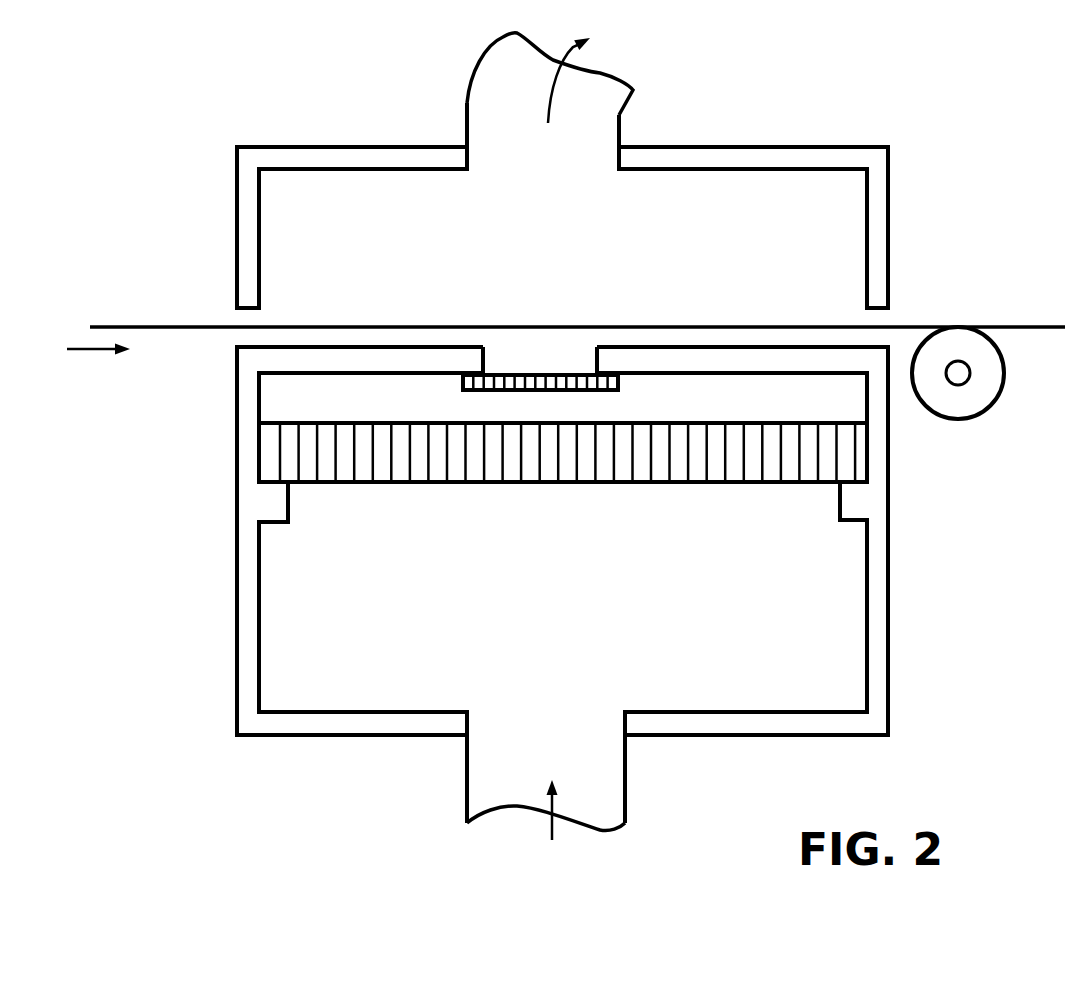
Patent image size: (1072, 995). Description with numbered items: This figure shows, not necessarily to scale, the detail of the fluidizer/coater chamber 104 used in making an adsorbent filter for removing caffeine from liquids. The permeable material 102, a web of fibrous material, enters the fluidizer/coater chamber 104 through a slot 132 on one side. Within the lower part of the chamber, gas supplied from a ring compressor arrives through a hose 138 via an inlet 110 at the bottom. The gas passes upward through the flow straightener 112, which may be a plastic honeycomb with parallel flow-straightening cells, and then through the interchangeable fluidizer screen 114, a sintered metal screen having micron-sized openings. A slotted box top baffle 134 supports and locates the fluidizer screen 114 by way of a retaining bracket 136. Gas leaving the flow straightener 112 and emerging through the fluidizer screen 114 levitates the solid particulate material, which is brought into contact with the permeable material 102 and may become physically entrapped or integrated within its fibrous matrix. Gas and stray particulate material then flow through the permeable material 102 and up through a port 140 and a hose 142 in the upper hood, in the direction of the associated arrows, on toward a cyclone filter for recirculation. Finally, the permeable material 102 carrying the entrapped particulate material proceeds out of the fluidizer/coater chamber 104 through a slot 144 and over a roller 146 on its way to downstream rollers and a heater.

The permeable material 102 is at (133, 327).
The fluidizer/coater chamber 104 is at (235, 792).
The inlet 110 is at (645, 760).
The flow straightener 112 is at (700, 495).
The fluidizer screen 114 is at (545, 355).
The slot 132 is at (210, 302).
The slotted box top baffle 134 is at (690, 353).
The retaining bracket 136 is at (615, 396).
The hose 138 is at (533, 767).
The port 140 is at (623, 147).
The hose 142 is at (528, 115).
The slot 144 is at (905, 310).
The roller 146 is at (986, 416).